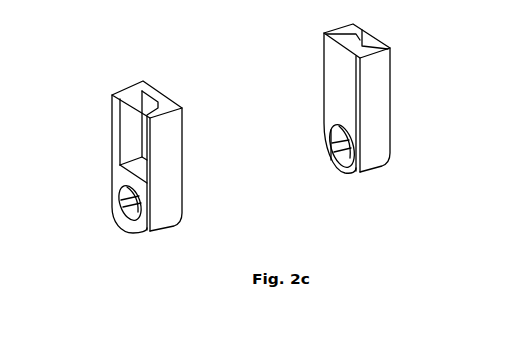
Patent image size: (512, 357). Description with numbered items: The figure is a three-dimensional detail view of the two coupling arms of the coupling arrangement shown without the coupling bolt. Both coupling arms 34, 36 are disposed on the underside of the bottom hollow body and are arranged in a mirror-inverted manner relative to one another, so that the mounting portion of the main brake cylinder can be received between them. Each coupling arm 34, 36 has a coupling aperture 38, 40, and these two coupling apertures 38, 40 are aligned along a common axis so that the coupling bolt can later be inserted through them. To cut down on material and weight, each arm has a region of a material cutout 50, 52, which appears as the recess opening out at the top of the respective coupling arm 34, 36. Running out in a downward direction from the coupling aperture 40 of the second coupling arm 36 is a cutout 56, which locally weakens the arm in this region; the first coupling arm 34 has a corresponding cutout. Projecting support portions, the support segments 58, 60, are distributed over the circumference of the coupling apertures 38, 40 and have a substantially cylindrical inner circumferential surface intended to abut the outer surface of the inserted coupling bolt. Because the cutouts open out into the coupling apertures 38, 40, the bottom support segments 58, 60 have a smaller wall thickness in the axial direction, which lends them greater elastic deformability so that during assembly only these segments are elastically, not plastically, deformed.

The coupling arm 34 is at (138, 137).
The coupling arm 36 is at (391, 62).
The coupling aperture 38 is at (131, 219).
The coupling aperture 40 is at (337, 165).
The material cutout 50 is at (130, 113).
The material cutout 52 is at (368, 37).
The cutout 56 is at (348, 174).
The support segment 58 is at (124, 214).
The support segment 60 is at (333, 135).